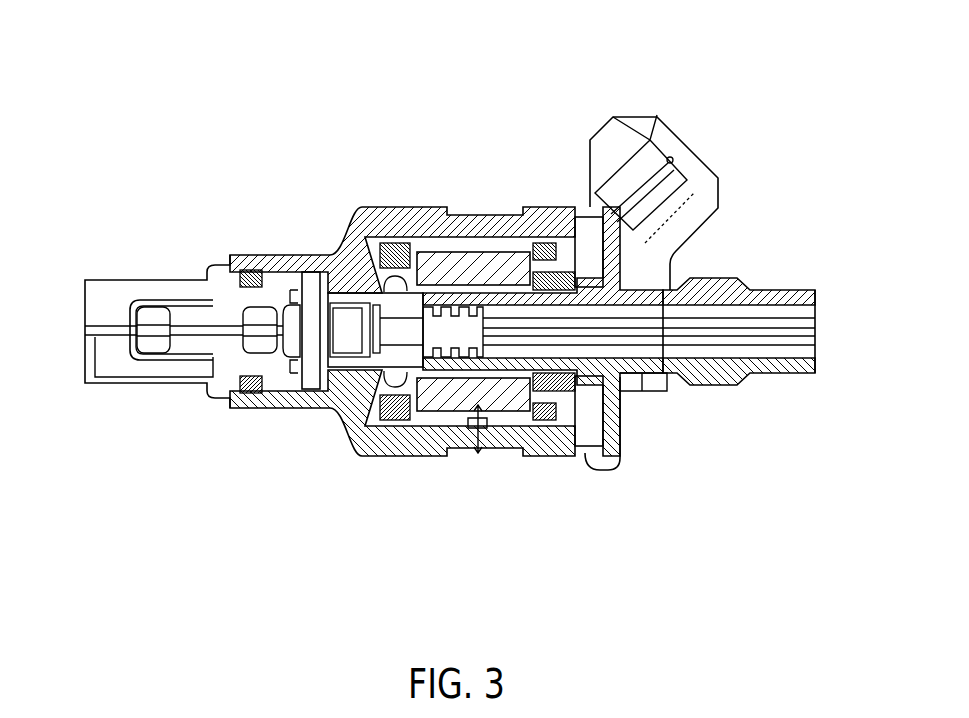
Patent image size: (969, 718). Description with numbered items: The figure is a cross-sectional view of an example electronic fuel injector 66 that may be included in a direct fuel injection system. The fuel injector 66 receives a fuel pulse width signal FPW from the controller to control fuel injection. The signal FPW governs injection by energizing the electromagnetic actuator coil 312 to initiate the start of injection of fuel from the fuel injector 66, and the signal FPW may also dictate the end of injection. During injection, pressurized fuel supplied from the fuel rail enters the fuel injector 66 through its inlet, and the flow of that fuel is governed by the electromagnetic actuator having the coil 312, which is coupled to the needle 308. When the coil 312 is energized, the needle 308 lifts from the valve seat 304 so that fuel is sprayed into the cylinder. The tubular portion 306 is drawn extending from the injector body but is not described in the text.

The fuel injector 66 is at (459, 290).
The valve seat 304 is at (82, 338).
The fuel inlet tube 306 is at (821, 347).
The needle 308 is at (213, 334).
The electromagnetic actuator coil 312 is at (495, 260).
The fuel pulse width signal FPW is at (688, 140).